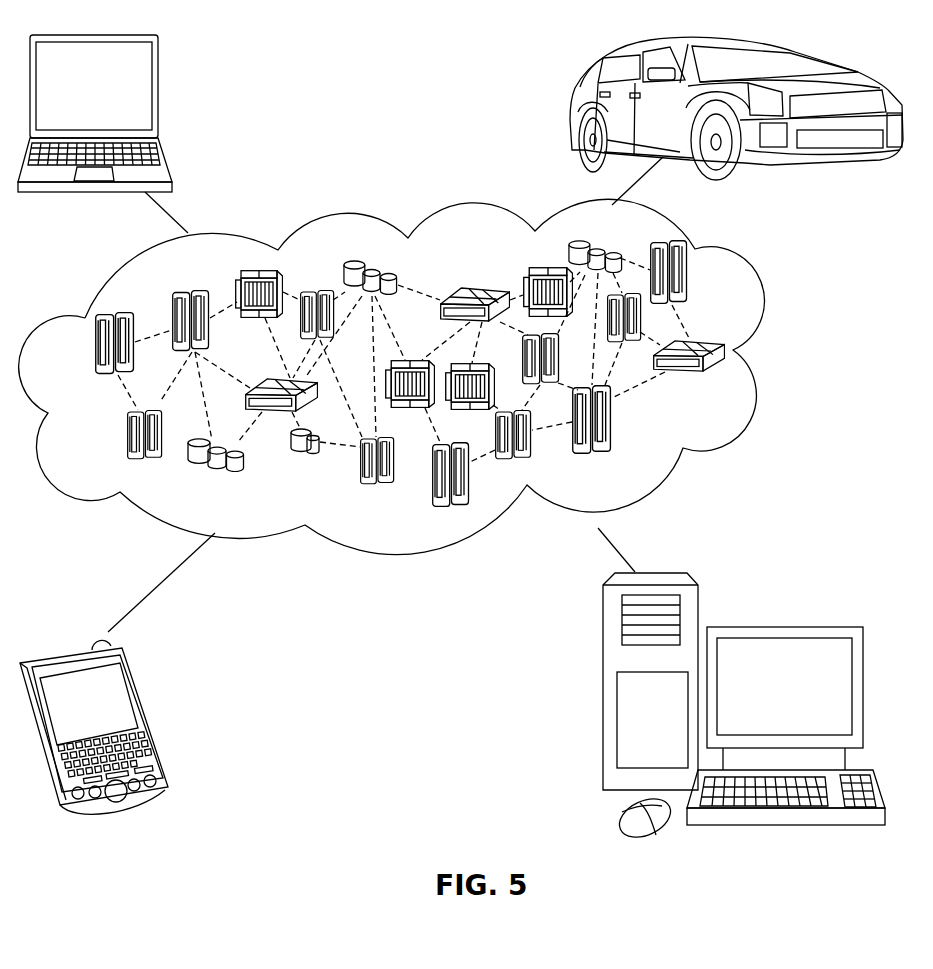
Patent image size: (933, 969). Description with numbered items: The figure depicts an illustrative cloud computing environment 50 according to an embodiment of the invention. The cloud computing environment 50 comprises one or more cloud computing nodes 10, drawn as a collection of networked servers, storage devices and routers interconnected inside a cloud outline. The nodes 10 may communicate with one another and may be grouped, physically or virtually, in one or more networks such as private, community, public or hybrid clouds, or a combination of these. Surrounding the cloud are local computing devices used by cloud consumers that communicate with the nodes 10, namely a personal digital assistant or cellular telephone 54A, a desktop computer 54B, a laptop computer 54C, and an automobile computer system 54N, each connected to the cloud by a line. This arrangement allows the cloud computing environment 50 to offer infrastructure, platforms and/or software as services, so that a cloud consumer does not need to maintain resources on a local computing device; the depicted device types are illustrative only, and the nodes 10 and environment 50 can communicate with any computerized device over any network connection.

The cloud computing node 10 is at (737, 382).
The cloud computing environment 50 is at (780, 353).
The personal digital assistant or cellular telephone 54A is at (152, 715).
The desktop computer 54B is at (782, 625).
The laptop computer 54C is at (160, 95).
The automobile computer system 54N is at (575, 108).